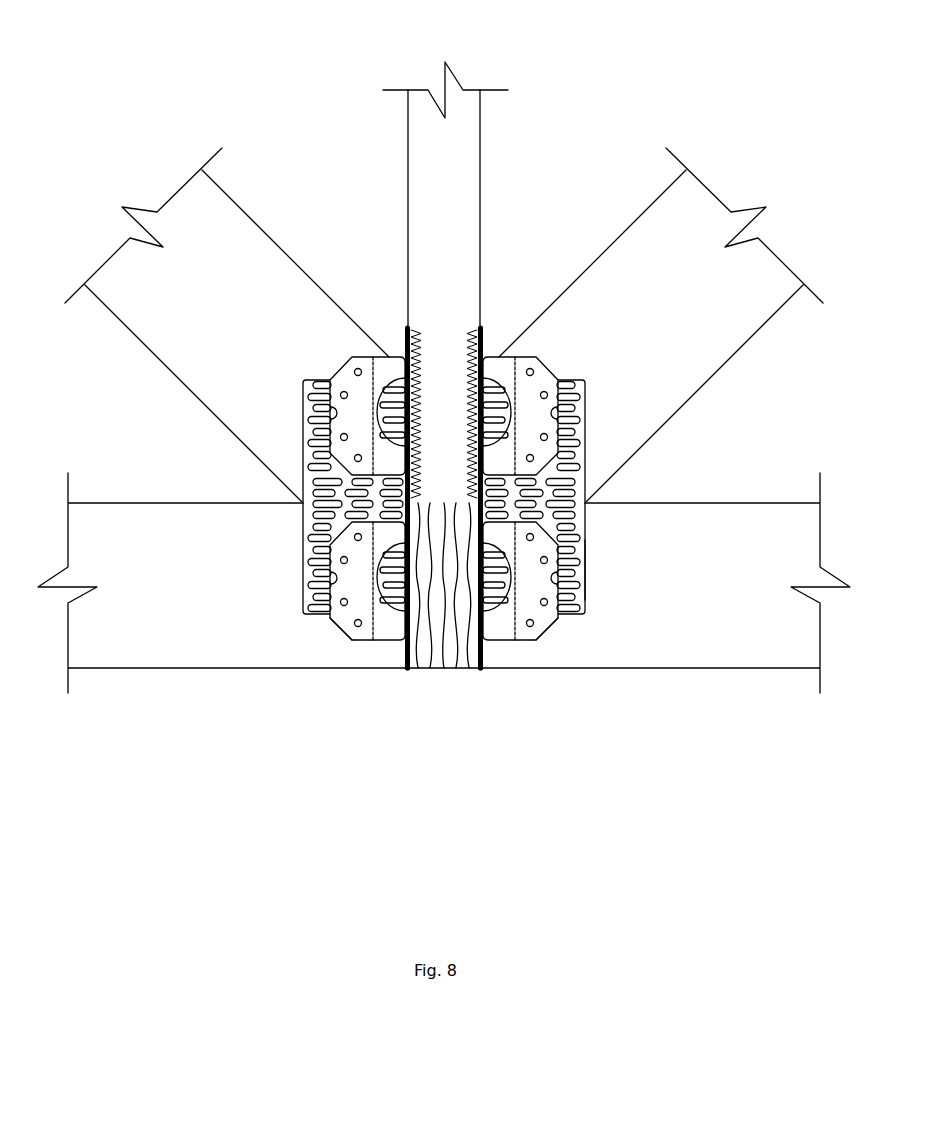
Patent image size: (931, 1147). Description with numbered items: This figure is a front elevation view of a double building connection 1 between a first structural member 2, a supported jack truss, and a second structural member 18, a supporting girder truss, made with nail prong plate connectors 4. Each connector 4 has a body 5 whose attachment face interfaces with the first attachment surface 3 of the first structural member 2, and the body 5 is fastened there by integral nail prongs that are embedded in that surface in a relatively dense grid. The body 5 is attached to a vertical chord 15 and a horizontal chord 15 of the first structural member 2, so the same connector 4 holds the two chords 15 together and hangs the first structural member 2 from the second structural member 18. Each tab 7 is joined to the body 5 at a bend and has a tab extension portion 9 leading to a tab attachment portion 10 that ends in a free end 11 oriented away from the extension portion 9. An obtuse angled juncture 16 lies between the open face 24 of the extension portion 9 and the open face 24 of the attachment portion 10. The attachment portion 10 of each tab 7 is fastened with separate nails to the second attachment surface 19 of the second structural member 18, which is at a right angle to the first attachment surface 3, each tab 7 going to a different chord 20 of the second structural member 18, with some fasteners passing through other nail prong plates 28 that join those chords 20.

The building connection 1 is at (374, 268).
The first structural member 2 is at (465, 91).
The first attachment surface 3 is at (407, 150).
The nail prong plate connector 4 is at (351, 644).
The body 5 is at (407, 672).
The first tab 7 is at (305, 470).
The first tab extension portion 9 is at (391, 375).
The first tab attachment portion 10 is at (342, 356).
The first free end 11 is at (303, 432).
The chord 15 is at (481, 192).
The obtuse angled juncture 16 is at (372, 378).
The second structural member 18 is at (247, 211).
The second attachment surface 19 is at (188, 352).
The chord 20 is at (647, 211).
The open face 24 is at (356, 366).
The nail prong plate 28 is at (586, 568).